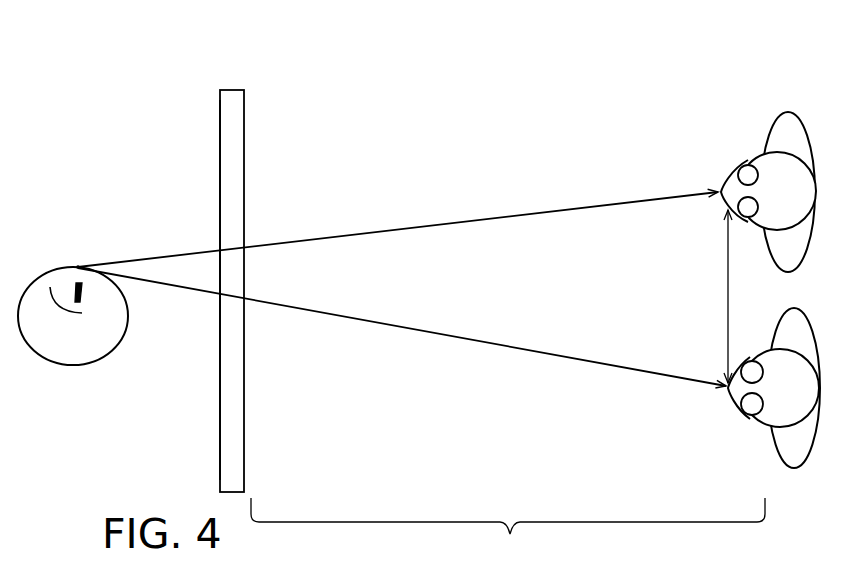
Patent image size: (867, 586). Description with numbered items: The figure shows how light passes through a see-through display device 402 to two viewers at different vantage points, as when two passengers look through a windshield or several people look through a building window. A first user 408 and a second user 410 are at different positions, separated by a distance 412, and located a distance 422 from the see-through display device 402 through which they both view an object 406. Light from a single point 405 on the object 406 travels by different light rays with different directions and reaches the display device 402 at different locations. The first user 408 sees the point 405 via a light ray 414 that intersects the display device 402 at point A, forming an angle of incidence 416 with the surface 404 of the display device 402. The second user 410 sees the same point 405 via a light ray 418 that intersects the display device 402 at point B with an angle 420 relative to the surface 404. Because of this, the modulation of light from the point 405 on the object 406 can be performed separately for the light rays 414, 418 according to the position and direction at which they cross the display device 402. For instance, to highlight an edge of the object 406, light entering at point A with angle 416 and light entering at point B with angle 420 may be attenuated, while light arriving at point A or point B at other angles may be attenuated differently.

The see-through display device 402 is at (232, 89).
The surface 404 is at (220, 173).
The point 405 is at (78, 266).
The object 406 is at (73, 365).
The first user 408 is at (783, 112).
The second user 410 is at (768, 440).
The distance 412 is at (728, 260).
The light ray 414 is at (483, 219).
The angle of incidence 416 is at (218, 237).
The light ray 418 is at (459, 337).
The angle 420 is at (217, 285).
The distance 422 is at (508, 528).
The point A is at (222, 248).
The point B is at (220, 306).